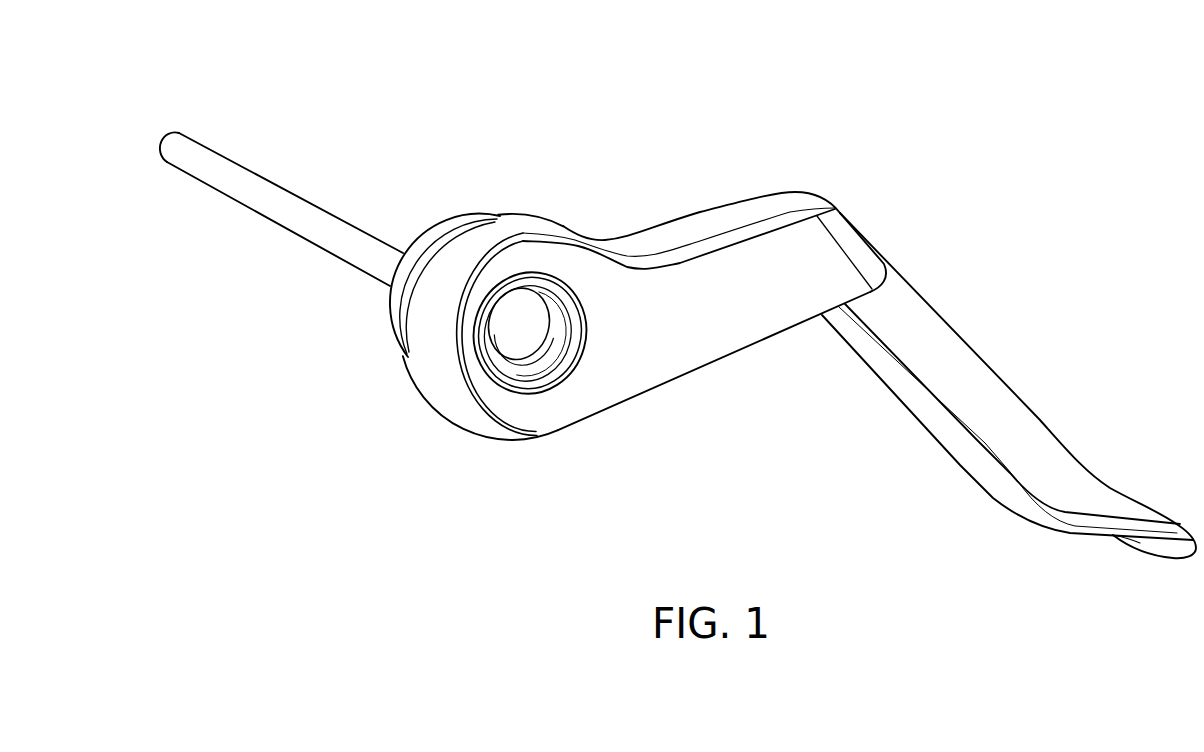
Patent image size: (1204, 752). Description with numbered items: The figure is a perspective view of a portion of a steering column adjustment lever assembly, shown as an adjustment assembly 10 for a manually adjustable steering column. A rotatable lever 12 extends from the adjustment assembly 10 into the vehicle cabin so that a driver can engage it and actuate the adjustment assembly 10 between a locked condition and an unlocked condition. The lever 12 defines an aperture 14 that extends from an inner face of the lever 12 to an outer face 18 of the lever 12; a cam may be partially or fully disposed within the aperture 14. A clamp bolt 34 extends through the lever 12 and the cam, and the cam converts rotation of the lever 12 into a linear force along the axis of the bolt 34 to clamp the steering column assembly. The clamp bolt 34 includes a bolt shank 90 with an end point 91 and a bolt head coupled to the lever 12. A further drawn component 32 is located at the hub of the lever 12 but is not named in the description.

The adjustment assembly 10 is at (402, 452).
The rotatable lever 12 is at (750, 212).
The aperture 14 is at (535, 274).
The outer face 18 is at (782, 313).
The end cap 32 is at (423, 243).
The clamp bolt 34 is at (226, 96).
The bolt shank 90 is at (266, 202).
The end point 91 is at (167, 137).